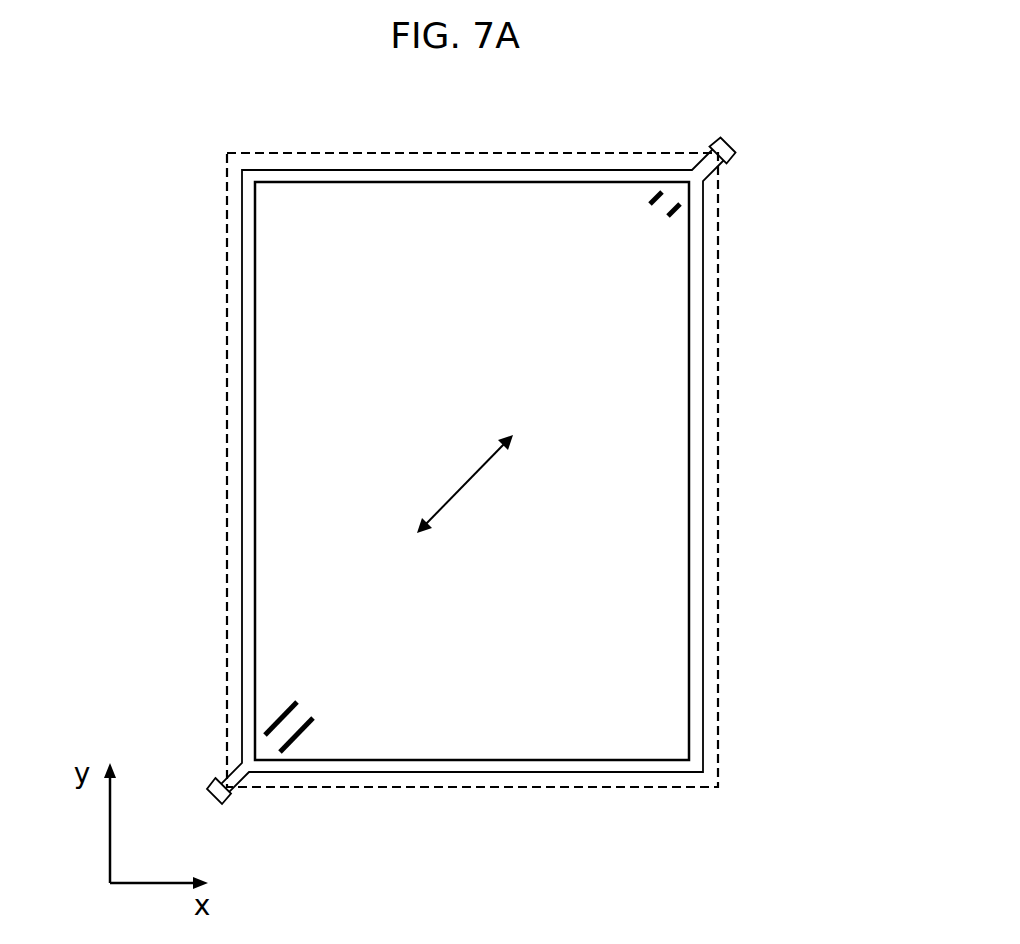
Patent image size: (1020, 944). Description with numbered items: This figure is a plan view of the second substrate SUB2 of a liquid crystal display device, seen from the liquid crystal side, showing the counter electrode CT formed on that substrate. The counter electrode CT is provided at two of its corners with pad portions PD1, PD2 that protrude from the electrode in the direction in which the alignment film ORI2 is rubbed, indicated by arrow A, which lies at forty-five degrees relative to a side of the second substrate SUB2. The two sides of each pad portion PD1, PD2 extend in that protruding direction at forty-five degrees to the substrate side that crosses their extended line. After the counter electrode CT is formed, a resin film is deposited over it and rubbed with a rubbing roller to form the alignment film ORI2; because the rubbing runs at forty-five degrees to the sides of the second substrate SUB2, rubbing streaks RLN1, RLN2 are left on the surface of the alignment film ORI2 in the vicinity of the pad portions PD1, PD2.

The second substrate SUB2 is at (718, 665).
The counter electrode CT is at (700, 433).
The alignment film ORI2 is at (252, 405).
The pad portion PD1 is at (713, 180).
The pad portion PD2 is at (250, 775).
The rubbing streak RLN1 is at (652, 199).
The rubbing streak RLN2 is at (280, 718).
The arrow indicating rubbing direction A is at (465, 484).